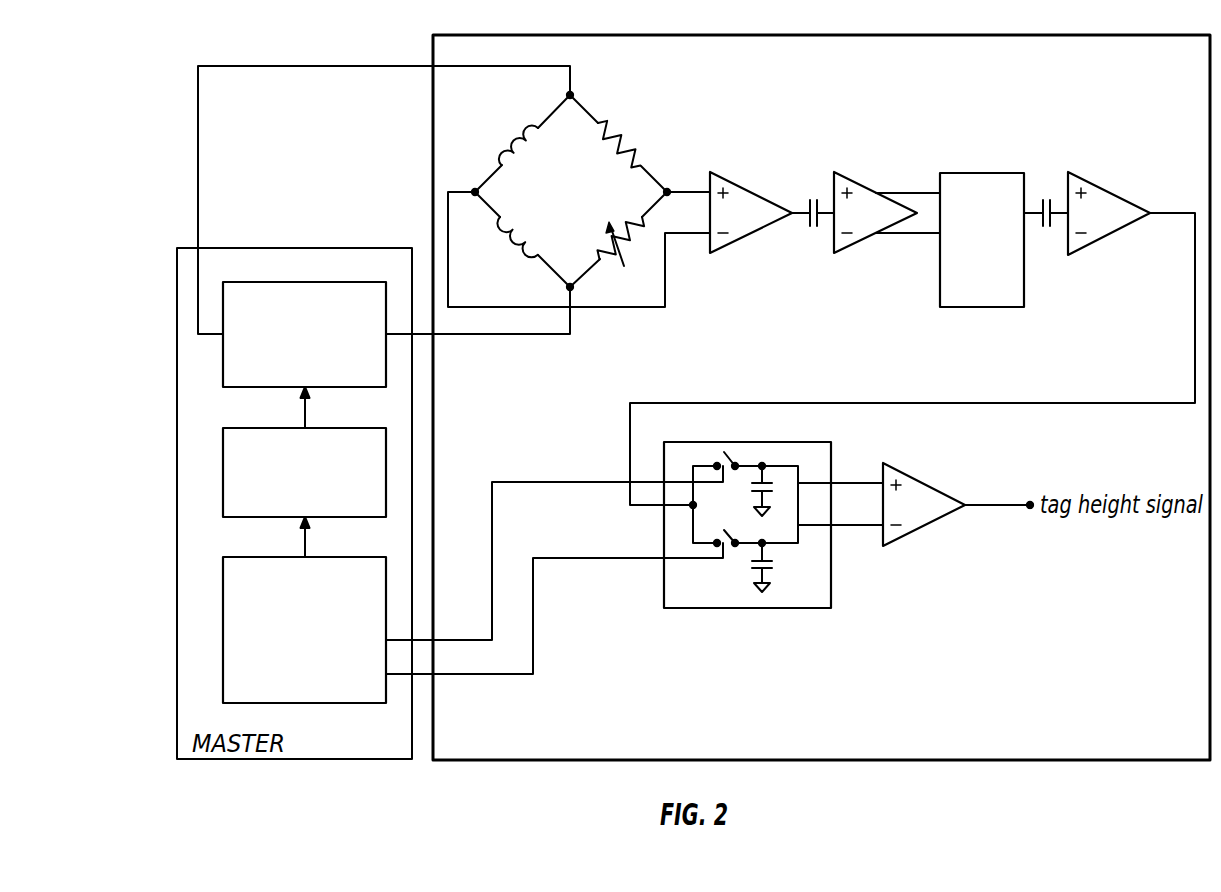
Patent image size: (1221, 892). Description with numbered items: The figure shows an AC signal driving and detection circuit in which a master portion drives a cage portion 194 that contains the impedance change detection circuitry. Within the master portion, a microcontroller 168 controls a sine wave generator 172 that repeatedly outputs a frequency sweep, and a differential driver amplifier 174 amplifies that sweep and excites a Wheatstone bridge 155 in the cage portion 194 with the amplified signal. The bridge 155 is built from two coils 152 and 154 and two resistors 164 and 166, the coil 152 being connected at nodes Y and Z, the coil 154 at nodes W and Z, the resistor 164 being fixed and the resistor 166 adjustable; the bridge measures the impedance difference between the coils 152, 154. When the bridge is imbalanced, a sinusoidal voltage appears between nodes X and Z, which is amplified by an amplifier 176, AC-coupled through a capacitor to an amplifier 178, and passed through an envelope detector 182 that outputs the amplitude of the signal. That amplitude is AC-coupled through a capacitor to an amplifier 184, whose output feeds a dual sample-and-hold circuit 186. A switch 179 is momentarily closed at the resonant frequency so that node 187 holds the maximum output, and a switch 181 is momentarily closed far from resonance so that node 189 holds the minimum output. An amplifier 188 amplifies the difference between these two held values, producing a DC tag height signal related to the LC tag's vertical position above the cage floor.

The coil 152 is at (513, 130).
The coil 154 is at (503, 257).
The Wheatstone bridge 155 is at (563, 173).
The resistor 164 is at (627, 143).
The resistor 166 is at (622, 250).
The microcontroller 168 is at (285, 557).
The sine wave generator 172 is at (285, 428).
The differential driver amplifier 174 is at (285, 282).
The amplifier 176 is at (743, 237).
The amplifier 178 is at (866, 238).
The switch 179 is at (724, 452).
The switch 181 is at (724, 530).
The envelope detector 182 is at (963, 307).
The amplifier 184 is at (1110, 235).
The dual sample-and-hold circuit 186 is at (748, 524).
The node 187 is at (847, 482).
The amplifier 188 is at (925, 525).
The node 189 is at (847, 527).
The cage portion 194 is at (1033, 760).